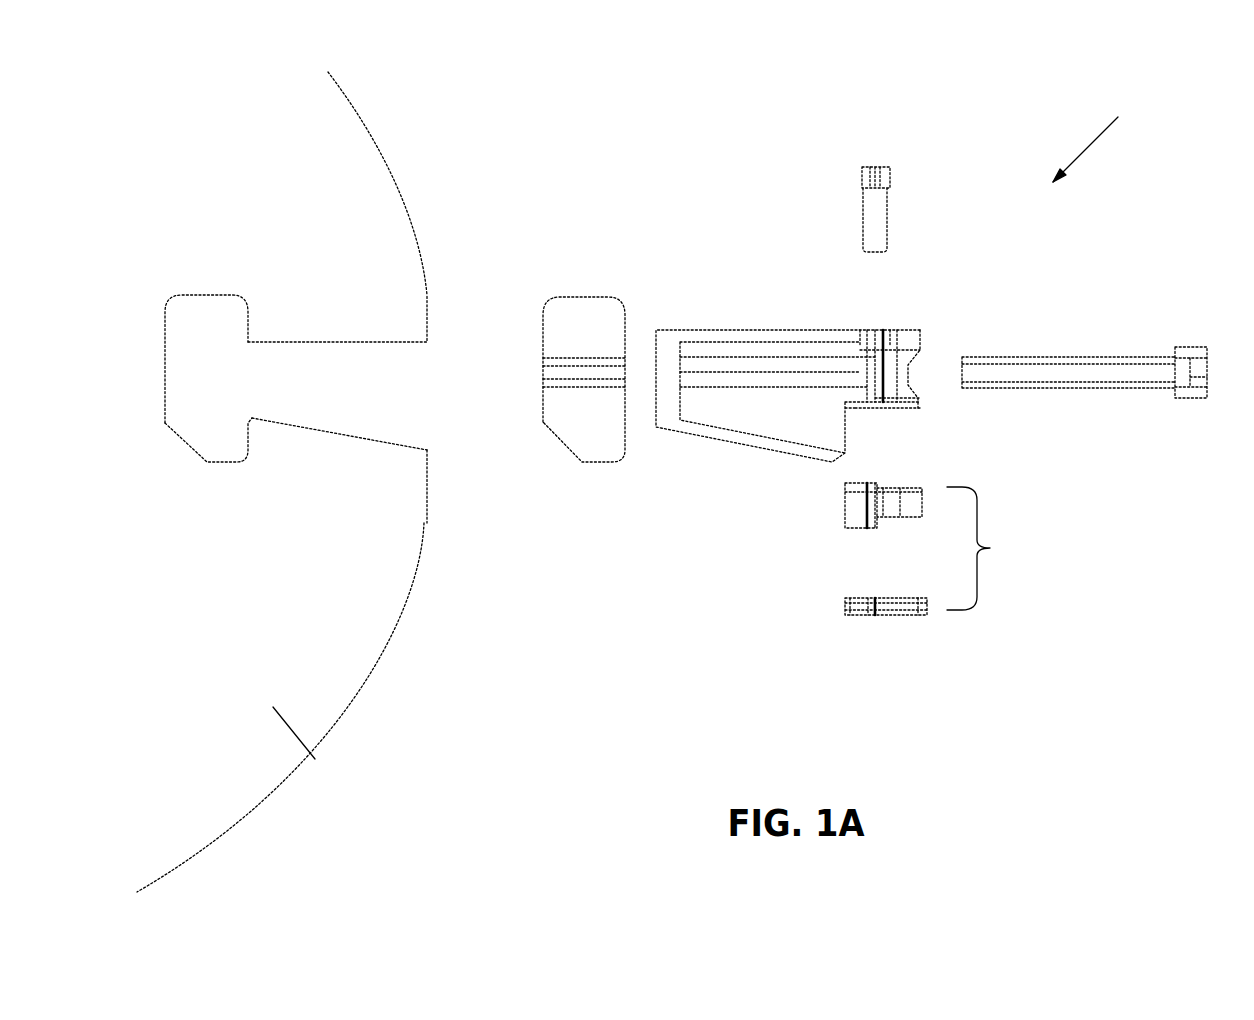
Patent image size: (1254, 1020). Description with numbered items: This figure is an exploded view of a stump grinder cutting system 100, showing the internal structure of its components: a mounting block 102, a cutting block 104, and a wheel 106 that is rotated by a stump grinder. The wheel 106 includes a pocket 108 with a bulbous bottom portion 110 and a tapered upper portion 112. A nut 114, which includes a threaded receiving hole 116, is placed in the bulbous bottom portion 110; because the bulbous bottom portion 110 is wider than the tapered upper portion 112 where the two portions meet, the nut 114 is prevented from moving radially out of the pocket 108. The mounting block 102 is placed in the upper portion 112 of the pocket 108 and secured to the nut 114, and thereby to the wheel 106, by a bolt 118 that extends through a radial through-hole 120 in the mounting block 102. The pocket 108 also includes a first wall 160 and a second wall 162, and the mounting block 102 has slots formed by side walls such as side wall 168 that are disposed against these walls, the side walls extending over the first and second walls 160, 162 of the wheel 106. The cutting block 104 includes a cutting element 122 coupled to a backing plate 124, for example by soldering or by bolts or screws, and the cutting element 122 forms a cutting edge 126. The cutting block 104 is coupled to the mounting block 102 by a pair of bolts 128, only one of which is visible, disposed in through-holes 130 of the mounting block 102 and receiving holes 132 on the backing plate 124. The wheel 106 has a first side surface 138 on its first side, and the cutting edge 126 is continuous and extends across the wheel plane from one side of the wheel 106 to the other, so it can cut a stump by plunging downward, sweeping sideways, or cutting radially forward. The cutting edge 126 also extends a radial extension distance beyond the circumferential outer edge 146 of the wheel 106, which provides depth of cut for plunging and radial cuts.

The cutting system 100 is at (1093, 137).
The mounting block 102 is at (733, 337).
The cutting block 104 is at (993, 548).
The wheel 106 is at (397, 205).
The pocket 108 is at (425, 388).
The bulbous bottom portion 110 is at (213, 350).
The tapered upper portion 112 is at (320, 363).
The nut 114 is at (572, 320).
The threaded receiving hole 116 is at (595, 373).
The bolt 118 is at (1055, 362).
The radial through-hole 120 is at (825, 373).
The cutting element 122 is at (857, 597).
The backing plate 124 is at (857, 503).
The cutting edge 126 is at (922, 617).
The bolts 128 is at (875, 222).
The through-holes 130 is at (895, 347).
The receiving holes 132 is at (883, 488).
The first side surface 138 is at (315, 759).
The circumferential outer edge 146 is at (408, 591).
The first wall 160 is at (397, 342).
The second wall 162 is at (275, 418).
The side wall 168 is at (670, 350).